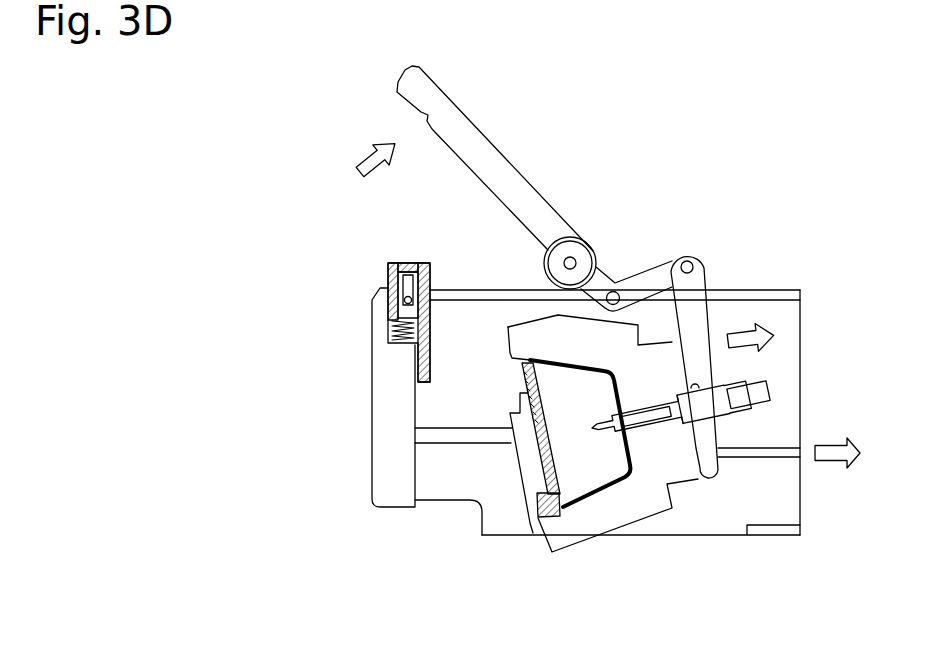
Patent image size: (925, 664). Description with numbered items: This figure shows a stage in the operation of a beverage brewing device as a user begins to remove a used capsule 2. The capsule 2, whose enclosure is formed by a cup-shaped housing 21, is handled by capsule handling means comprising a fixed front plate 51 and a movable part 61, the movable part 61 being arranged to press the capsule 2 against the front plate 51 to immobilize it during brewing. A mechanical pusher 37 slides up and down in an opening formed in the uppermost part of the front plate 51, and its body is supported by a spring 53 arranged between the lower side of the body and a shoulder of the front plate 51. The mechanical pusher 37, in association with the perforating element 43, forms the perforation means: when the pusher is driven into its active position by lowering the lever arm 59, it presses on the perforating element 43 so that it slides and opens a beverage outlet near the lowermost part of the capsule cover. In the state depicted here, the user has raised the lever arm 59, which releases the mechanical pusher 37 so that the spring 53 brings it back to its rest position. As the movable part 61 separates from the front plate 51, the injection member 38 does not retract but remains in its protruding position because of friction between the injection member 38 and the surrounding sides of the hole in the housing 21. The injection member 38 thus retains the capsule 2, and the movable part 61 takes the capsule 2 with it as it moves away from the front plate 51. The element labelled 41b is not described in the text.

The capsule 2 is at (625, 392).
The cup-shaped housing 21 is at (595, 497).
The mechanical pusher 37 is at (390, 287).
The injection member 38 is at (613, 432).
The plate 41b is at (530, 518).
The perforating element 43 is at (529, 472).
The fixed front plate 51 is at (392, 490).
The spring 53 is at (397, 327).
The lever arm 59 is at (510, 181).
The movable part 61 is at (675, 488).